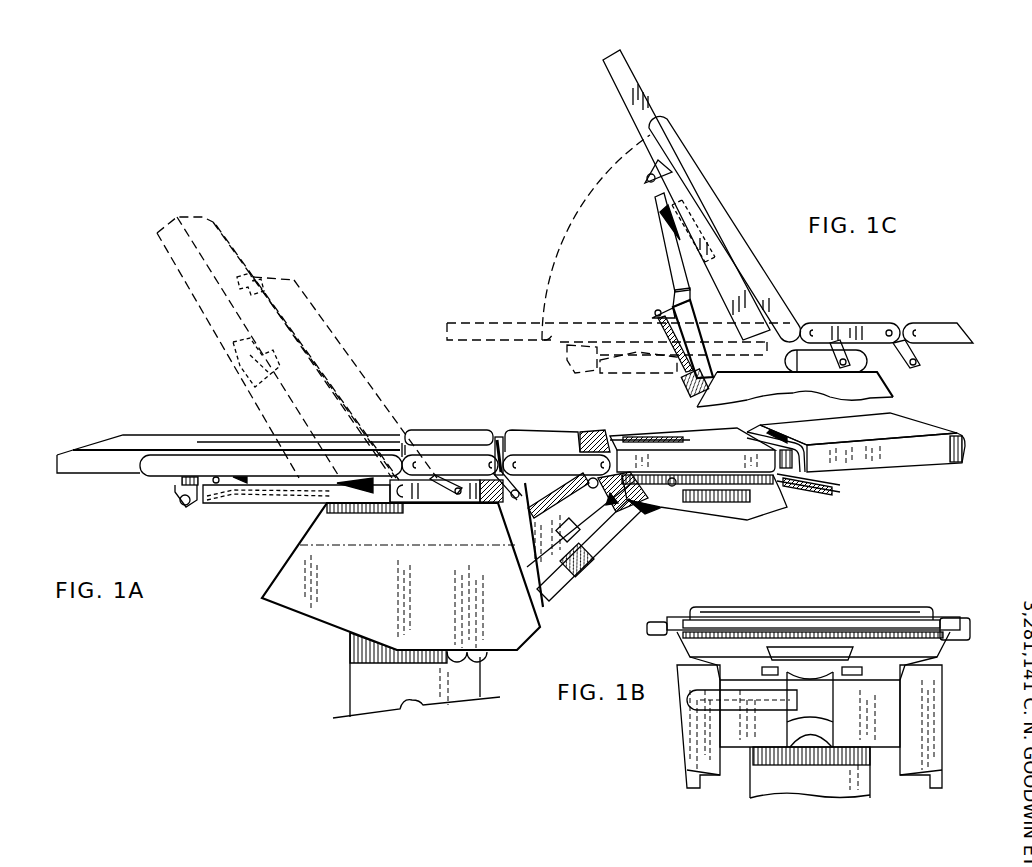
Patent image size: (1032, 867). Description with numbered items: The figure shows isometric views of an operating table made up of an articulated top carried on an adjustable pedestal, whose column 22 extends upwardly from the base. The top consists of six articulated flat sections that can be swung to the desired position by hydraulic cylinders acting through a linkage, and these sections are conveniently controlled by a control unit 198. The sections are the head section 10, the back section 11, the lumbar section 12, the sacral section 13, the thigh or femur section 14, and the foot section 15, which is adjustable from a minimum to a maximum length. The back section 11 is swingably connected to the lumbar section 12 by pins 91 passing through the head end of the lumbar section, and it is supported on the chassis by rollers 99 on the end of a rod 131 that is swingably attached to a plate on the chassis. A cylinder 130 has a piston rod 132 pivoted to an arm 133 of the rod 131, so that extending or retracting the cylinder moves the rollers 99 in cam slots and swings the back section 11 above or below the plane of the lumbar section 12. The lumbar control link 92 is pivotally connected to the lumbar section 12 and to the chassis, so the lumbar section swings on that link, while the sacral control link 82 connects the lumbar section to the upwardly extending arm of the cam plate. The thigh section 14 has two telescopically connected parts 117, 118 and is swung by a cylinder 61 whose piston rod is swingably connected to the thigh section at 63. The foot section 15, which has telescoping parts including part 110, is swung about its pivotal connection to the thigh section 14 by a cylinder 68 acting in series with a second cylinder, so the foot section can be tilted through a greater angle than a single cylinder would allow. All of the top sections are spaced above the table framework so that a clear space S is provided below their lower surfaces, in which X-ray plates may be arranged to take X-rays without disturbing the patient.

In FIG. 1A, the head section 10 is at (238, 252).
In FIG. 1C, the head section 10 is at (647, 93).
In FIG. 1B, the head section 10 is at (958, 633).
In FIG. 1A, the back section 11 is at (335, 355).
In FIG. 1C, the back section 11 is at (718, 197).
In FIG. 1A, the lumbar section 12 is at (450, 433).
In FIG. 1C, the lumbar section 12 is at (862, 328).
In FIG. 1A, the sacral section 13 is at (548, 433).
In FIG. 1C, the sacral section 13 is at (935, 328).
In FIG. 1A, the thigh (femur) section 14 is at (707, 434).
In FIG. 1A, the foot section 15 is at (905, 467).
In FIG. 1A, the column 22 is at (480, 678).
In FIG. 1B, the column 22 is at (870, 783).
In FIG. 1A, the cylinder 61 is at (606, 543).
In FIG. 1A, the swingable connection of piston rod to thigh section 63 is at (672, 490).
In FIG. 1A, the cylinder 68 is at (797, 485).
In FIG. 1A, the sacral control link 82 is at (490, 500).
In FIG. 1A, the pins 91 is at (410, 442).
In FIG. 1A, the lumbar control link 92 is at (440, 488).
In FIG. 1A, the rollers 99 is at (213, 496).
In FIG. 1C, the rollers 99 is at (658, 196).
In FIG. 1A, the foot section part 110 is at (806, 414).
In FIG. 1A, the thigh section part 117 is at (615, 432).
In FIG. 1A, the thigh section part 118 is at (590, 433).
In FIG. 1C, the cylinder 130 is at (688, 388).
In FIG. 1C, the rod 131 is at (677, 247).
In FIG. 1C, the piston rod 132 is at (673, 347).
In FIG. 1C, the arm 133 is at (668, 302).
In FIG. 1B, the control unit 198 is at (747, 711).
In FIG. 1B, the clear space S is at (723, 648).